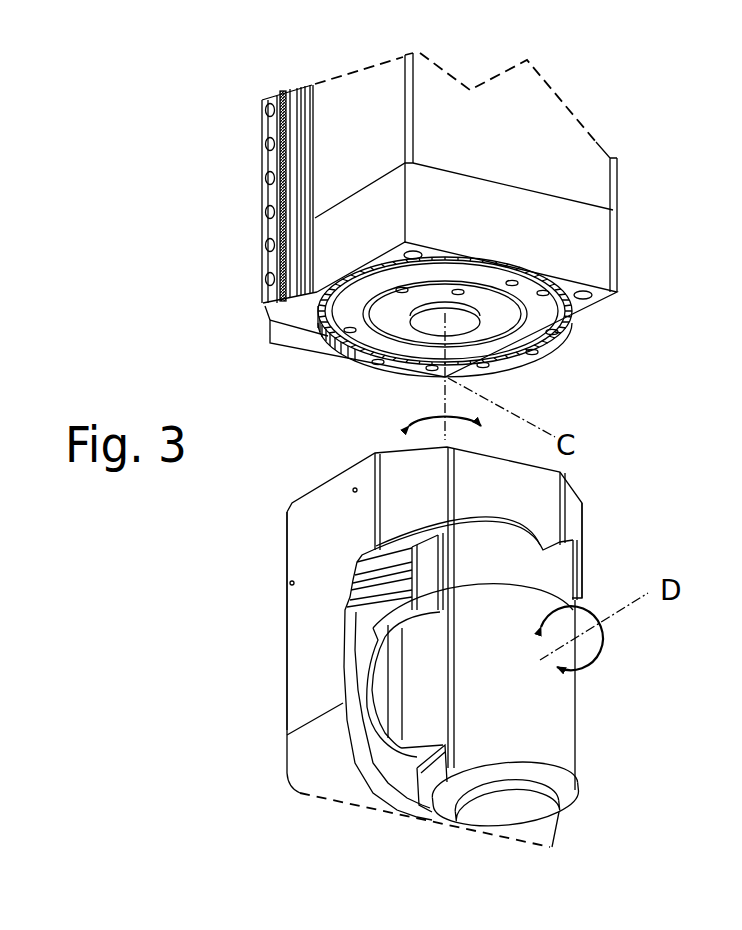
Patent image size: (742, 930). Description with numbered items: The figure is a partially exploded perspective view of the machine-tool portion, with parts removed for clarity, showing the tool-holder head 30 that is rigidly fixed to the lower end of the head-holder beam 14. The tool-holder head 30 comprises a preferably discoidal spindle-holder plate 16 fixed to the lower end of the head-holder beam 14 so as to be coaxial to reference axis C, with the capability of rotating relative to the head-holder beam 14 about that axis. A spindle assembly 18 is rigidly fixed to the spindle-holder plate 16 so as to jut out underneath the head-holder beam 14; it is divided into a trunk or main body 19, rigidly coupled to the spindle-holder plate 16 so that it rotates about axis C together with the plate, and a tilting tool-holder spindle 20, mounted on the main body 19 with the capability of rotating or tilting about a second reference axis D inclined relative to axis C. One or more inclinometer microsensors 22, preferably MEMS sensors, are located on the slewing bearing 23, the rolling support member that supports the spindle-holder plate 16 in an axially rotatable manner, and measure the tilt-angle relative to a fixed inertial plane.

The head-holder beam 14 is at (502, 213).
The spindle-holder plate 16 is at (503, 327).
The spindle assembly 18 is at (280, 751).
The trunk or main body 19 is at (315, 583).
The tilting tool-holder spindle 20 is at (552, 727).
The inclinometer microsensors 22 is at (456, 295).
The slewing bearing 23 is at (337, 336).
The tool-holder head 30 is at (345, 805).